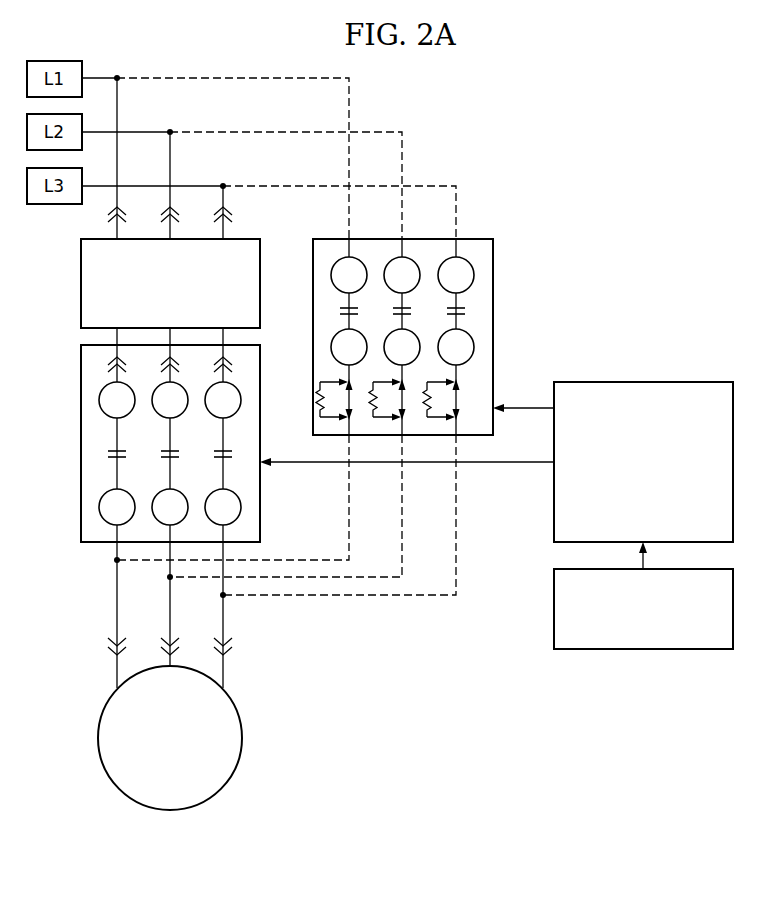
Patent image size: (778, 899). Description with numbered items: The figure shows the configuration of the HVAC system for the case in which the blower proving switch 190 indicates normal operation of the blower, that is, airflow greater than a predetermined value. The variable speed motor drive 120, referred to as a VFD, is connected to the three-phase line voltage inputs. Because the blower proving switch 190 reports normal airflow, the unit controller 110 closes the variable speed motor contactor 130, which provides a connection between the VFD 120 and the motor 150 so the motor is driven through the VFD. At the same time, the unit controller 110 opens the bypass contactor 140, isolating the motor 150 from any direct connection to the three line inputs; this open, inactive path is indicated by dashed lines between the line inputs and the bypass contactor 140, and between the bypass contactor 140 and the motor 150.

The unit controller 110 is at (670, 382).
The variable speed motor drive 120 is at (81, 283).
The variable speed motor contactor 130 is at (81, 470).
The bypass contactor 140 is at (493, 283).
The motor 150 is at (98, 738).
The blower proving switch 190 is at (661, 650).